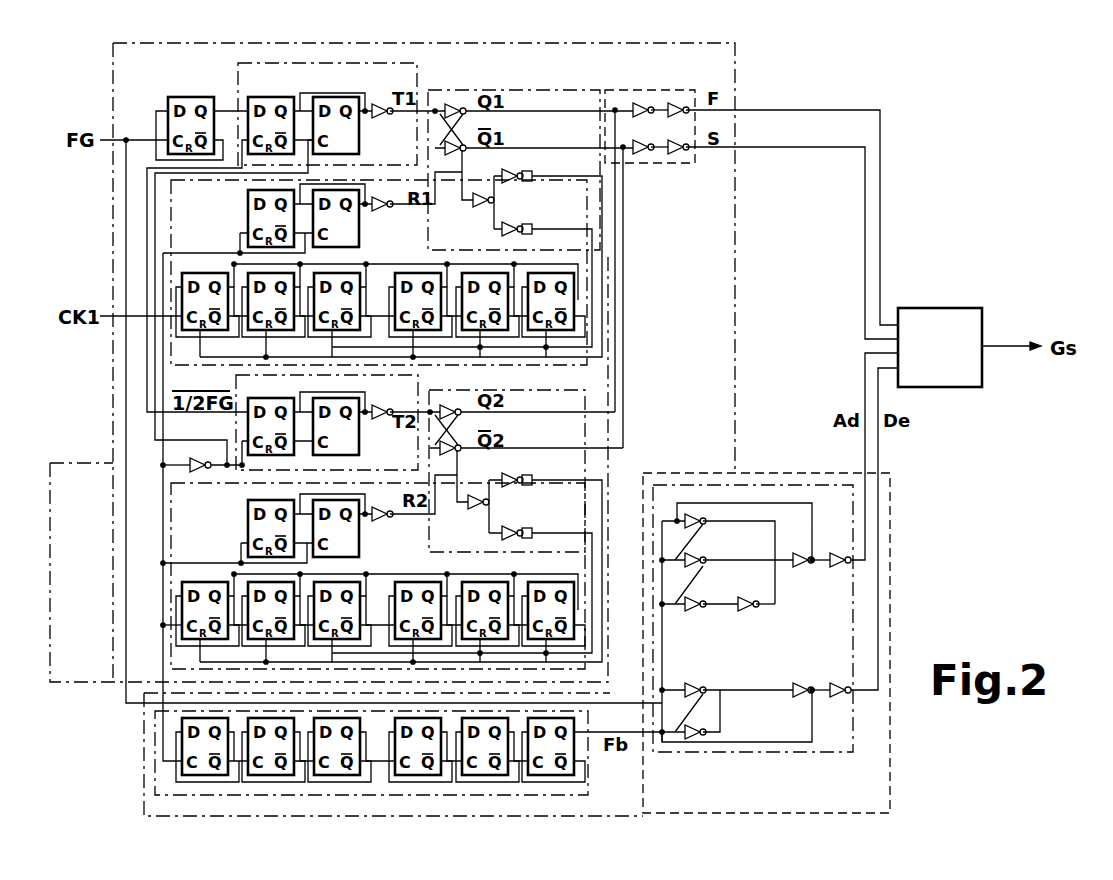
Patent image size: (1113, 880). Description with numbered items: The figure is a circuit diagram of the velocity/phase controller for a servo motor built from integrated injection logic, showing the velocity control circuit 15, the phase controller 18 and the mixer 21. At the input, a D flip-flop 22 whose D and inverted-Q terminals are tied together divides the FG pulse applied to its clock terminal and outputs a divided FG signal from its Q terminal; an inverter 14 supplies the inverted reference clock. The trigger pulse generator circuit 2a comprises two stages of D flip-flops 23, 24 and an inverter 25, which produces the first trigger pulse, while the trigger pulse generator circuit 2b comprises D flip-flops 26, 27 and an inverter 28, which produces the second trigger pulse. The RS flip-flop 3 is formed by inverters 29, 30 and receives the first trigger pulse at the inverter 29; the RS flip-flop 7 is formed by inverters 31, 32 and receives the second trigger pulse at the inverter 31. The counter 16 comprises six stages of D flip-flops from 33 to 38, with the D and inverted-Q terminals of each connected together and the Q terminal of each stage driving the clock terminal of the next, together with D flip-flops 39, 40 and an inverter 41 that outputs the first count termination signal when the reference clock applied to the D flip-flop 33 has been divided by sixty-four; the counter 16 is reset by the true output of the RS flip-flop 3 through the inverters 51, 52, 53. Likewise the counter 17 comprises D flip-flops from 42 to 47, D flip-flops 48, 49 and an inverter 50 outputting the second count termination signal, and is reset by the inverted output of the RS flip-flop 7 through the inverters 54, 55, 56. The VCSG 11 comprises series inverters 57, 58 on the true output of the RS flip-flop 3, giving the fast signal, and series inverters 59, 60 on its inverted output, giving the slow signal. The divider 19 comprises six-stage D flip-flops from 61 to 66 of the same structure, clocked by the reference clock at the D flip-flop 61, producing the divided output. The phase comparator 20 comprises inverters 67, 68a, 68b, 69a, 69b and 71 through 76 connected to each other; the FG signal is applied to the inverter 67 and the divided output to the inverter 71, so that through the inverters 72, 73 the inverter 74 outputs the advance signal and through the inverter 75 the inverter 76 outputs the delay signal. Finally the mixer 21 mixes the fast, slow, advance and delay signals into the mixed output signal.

The trigger pulse generator circuit 2a is at (331, 63).
The trigger pulse generator circuit 2b is at (418, 377).
The RS flip-flop 3 is at (434, 90).
The RS flip-flop 7 is at (470, 420).
The VCSG 11 is at (605, 90).
The inverter 14 is at (185, 465).
The velocity control circuit 15 is at (735, 60).
The counter 16 is at (587, 258).
The counter 17 is at (170, 574).
The phase controller 18 is at (890, 772).
The divider 19 is at (155, 772).
The phase comparator 20 is at (750, 752).
The mixer 21 is at (944, 308).
The D flip-flop 22 is at (168, 98).
The D flip-flop 23 is at (269, 97).
The D flip-flop 24 is at (334, 97).
The inverter 25 is at (376, 117).
The D flip-flop 26 is at (246, 427).
The D flip-flop 27 is at (360, 445).
The inverter 28 is at (380, 412).
The inverter 29 is at (453, 104).
The inverter 30 is at (468, 153).
The inverter 31 is at (452, 405).
The inverter 32 is at (466, 456).
The D flip-flop 33 is at (198, 253).
The D flip-flop 38 is at (574, 292).
The D flip-flop 39 is at (247, 204).
The D flip-flop 40 is at (360, 247).
The inverter 41 is at (386, 212).
The D flip-flop 42 is at (198, 582).
The D flip-flop 47 is at (574, 600).
The D flip-flop 48 is at (247, 512).
The D flip-flop 49 is at (359, 555).
The inverter 50 is at (386, 518).
The inverter 51 is at (499, 198).
The inverter 52 is at (529, 170).
The inverter 53 is at (529, 226).
The inverter 54 is at (496, 500).
The inverter 55 is at (529, 474).
The inverter 56 is at (528, 526).
The inverter 57 is at (634, 98).
The inverter 58 is at (670, 98).
The inverter 59 is at (634, 158).
The inverter 60 is at (670, 158).
The D flip-flop 61 is at (200, 777).
The D flip-flop 66 is at (567, 777).
The inverter 67 is at (692, 514).
The inverter 68a is at (713, 554).
The inverter 68b is at (713, 592).
The inverter 69a is at (712, 692).
The inverter 69b is at (712, 732).
The inverter 71 is at (690, 740).
The inverter 72 is at (744, 610).
The inverter 73 is at (799, 568).
The inverter 74 is at (834, 568).
The inverter 75 is at (799, 683).
The inverter 76 is at (834, 683).